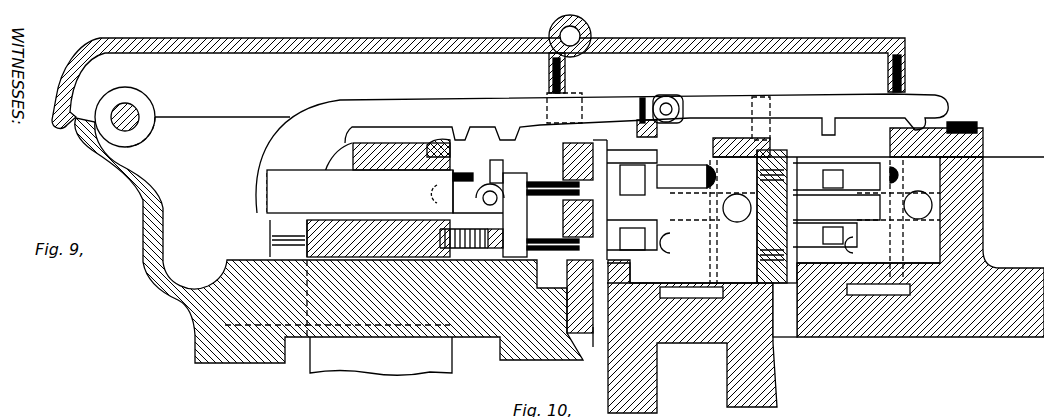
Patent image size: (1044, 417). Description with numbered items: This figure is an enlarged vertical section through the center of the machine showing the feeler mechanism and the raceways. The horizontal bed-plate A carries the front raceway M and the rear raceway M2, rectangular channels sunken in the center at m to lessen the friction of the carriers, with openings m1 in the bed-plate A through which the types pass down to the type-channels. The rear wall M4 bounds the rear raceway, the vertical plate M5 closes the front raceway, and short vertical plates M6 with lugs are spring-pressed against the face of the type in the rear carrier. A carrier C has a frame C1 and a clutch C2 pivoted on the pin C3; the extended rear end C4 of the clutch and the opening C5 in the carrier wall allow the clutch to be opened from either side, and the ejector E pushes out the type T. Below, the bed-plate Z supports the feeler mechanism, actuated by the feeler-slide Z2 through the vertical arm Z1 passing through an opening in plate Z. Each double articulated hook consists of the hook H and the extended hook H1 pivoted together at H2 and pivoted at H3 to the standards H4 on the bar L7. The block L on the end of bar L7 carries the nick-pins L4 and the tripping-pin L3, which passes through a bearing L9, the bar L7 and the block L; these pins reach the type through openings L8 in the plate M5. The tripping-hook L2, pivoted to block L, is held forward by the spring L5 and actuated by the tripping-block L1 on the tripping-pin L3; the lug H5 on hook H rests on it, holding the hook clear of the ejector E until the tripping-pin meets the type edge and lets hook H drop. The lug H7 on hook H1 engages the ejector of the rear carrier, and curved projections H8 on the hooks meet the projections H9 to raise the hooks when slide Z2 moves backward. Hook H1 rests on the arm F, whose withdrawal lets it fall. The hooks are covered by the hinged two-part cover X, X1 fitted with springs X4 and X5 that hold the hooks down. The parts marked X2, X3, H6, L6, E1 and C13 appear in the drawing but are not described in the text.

The cover section X is at (478, 71).
The cover section X1 is at (808, 50).
The pivot hub X2 is at (550, 30).
The pivot pin X3 is at (132, 112).
The spring X4 is at (548, 79).
The spring X5 is at (905, 73).
The feeler-hook H is at (395, 103).
The second feeler-hook H1 is at (842, 102).
The pivot H2 is at (667, 96).
The pivot H3 is at (270, 186).
The standard H4 is at (270, 237).
The lug H5 is at (521, 140).
The lever lug H6 is at (660, 134).
The lug H7 is at (830, 131).
The curved projection H8 is at (472, 128).
The projection H9 is at (452, 136).
The block L is at (483, 193).
The tripping-block L1 is at (512, 176).
The tripping-hook L2 is at (484, 158).
The tripping-pin L3 is at (545, 182).
The nick-pin L4 is at (545, 243).
The spring L5 is at (447, 151).
The spring follower L6 is at (498, 231).
The bar L7 is at (360, 200).
The opening L8 is at (598, 170).
The bearing L9 is at (446, 183).
The bed-plate Z is at (490, 328).
The vertical arm Z1 is at (368, 372).
The feeler-slide Z2 is at (436, 197).
The bed-plate A is at (559, 265).
The front raceway M is at (652, 283).
The rear raceway M2 is at (853, 267).
The rear wall of raceway M4 is at (975, 206).
The vertical plate M5 is at (580, 296).
The short vertical plate M6 is at (785, 310).
The sunken center of raceway m is at (785, 290).
The opening m1 is at (598, 330).
The carrier C is at (682, 216).
The carrier-frame C1 is at (868, 220).
The clutch C2 is at (722, 210).
The pin C3 is at (739, 264).
The extended rear end of clutch C4 is at (827, 206).
The opening C5 is at (811, 192).
The cartridge nose C13 is at (902, 176).
The ejector E is at (628, 133).
The extractor hook E1 is at (632, 180).
The arm F is at (748, 126).
The type T is at (836, 207).